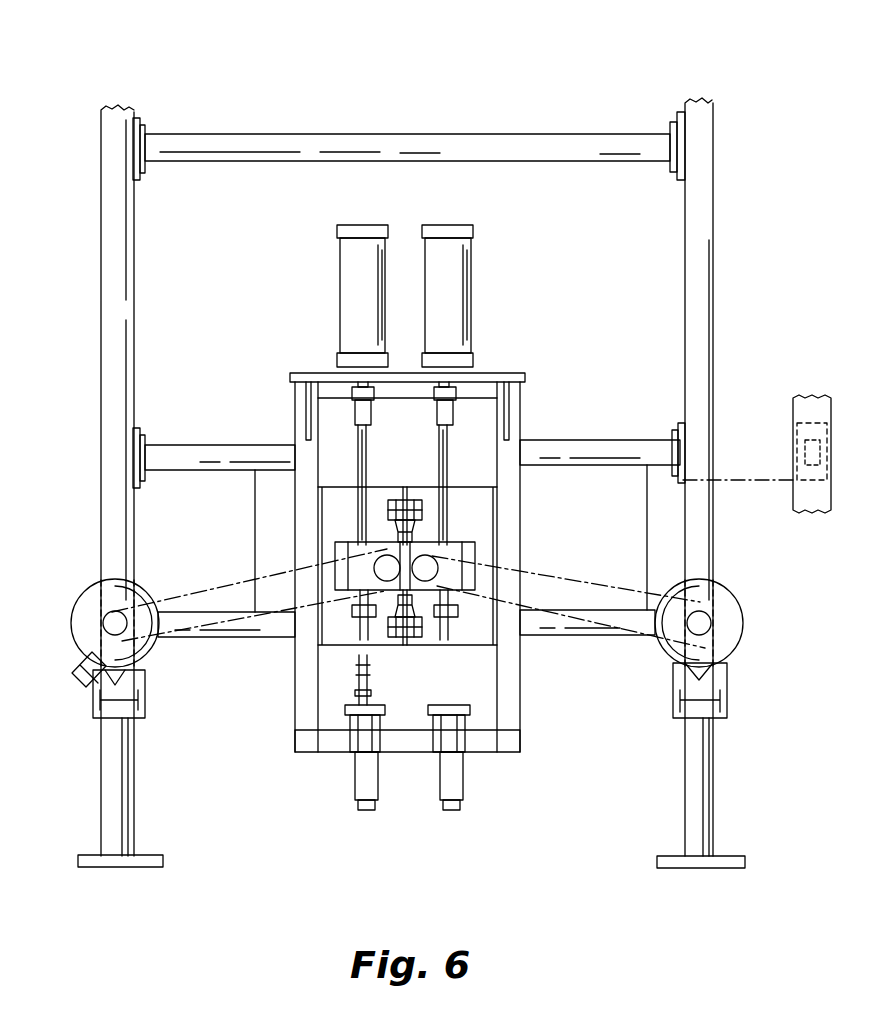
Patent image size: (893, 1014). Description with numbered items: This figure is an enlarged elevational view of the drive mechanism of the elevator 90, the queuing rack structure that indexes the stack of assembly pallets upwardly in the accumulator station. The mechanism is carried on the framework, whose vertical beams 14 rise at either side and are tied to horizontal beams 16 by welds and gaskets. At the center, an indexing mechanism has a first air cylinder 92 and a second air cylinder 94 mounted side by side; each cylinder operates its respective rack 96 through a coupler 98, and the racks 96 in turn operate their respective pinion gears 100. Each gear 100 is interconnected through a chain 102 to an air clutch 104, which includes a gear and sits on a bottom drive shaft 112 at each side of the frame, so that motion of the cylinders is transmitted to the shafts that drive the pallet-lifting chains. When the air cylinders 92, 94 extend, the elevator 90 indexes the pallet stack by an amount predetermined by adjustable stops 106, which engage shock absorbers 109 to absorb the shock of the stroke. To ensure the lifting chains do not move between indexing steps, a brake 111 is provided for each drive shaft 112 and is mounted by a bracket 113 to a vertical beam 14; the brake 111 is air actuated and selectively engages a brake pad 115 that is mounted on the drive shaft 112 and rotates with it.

The vertical beams 14 is at (110, 338).
The horizontal beams 16 is at (627, 610).
The elevator 90 is at (580, 230).
The first air cylinder 92 is at (340, 297).
The second air cylinder 94 is at (472, 297).
The racks 96 is at (358, 445).
The couplers 98 is at (355, 392).
The pinion gears 100 is at (388, 555).
The chain 102 is at (192, 630).
The air clutches 104 is at (84, 582).
The adjustable stops 106 is at (365, 625).
The shock absorbers 109 is at (380, 788).
The brakes 111 is at (75, 678).
The drive shaft 112 is at (100, 623).
The brackets 113 is at (150, 680).
The brake pads 115 is at (78, 598).